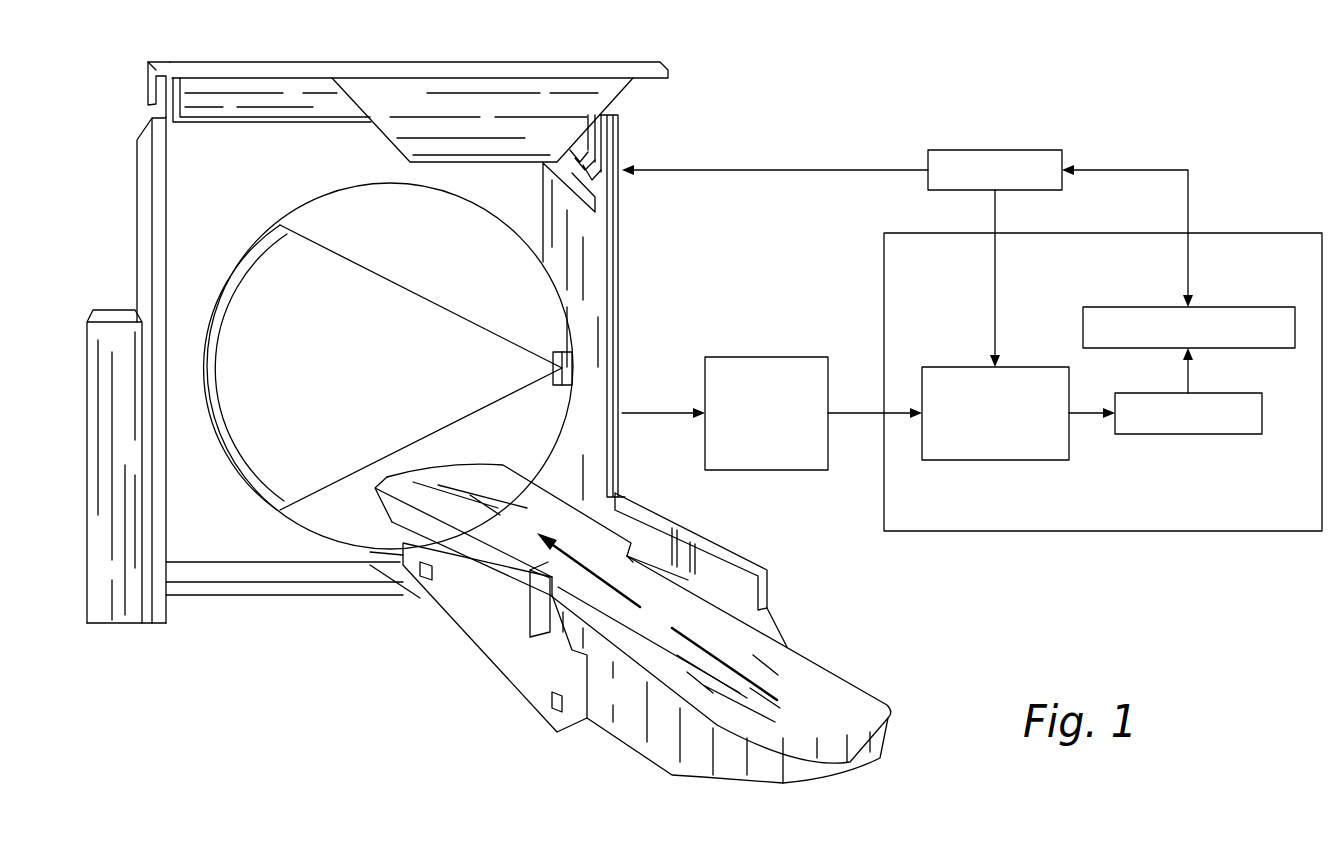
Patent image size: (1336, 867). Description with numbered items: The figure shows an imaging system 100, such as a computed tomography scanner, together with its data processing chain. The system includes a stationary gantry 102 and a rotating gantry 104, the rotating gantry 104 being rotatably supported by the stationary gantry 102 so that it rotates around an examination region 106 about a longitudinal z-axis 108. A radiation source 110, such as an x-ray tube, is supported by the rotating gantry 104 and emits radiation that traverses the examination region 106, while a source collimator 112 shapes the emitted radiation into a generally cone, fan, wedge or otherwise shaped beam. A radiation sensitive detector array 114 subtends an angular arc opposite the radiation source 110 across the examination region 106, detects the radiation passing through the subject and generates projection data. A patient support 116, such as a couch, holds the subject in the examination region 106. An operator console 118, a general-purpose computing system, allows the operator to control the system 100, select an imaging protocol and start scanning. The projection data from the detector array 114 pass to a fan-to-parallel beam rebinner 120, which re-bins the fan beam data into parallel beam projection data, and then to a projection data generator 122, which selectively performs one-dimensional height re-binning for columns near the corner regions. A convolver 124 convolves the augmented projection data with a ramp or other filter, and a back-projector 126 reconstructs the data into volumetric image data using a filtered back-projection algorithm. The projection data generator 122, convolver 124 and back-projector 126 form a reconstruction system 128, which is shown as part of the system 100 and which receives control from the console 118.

The imaging system 100 is at (1062, 78).
The stationary gantry 102 is at (142, 180).
The rotating gantry 104 is at (340, 190).
The examination region 106 is at (402, 377).
The z-axis 108 is at (697, 642).
The radiation source 110 is at (570, 368).
The source collimator 112 is at (553, 351).
The radiation sensitive detector array 114 is at (258, 248).
The patient support 116 is at (805, 675).
The operator console 118 is at (1001, 150).
The fan-to-parallel beam rebinner 120 is at (772, 357).
The projection data generator 122 is at (1008, 460).
The convolver 124 is at (1197, 437).
The back-projector 126 is at (1135, 307).
The reconstruction system 128 is at (1242, 233).